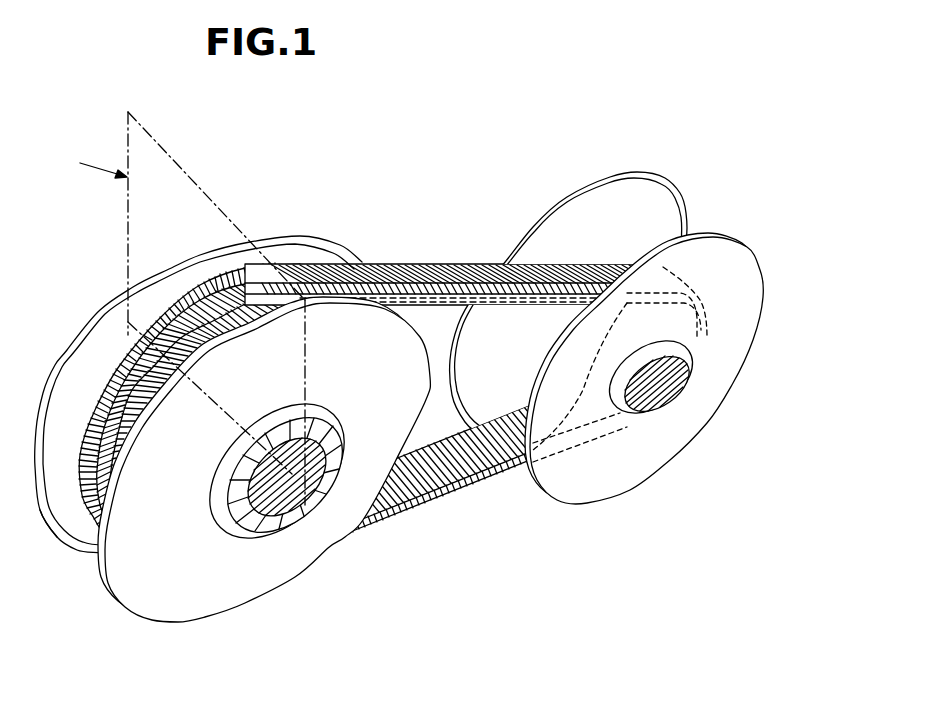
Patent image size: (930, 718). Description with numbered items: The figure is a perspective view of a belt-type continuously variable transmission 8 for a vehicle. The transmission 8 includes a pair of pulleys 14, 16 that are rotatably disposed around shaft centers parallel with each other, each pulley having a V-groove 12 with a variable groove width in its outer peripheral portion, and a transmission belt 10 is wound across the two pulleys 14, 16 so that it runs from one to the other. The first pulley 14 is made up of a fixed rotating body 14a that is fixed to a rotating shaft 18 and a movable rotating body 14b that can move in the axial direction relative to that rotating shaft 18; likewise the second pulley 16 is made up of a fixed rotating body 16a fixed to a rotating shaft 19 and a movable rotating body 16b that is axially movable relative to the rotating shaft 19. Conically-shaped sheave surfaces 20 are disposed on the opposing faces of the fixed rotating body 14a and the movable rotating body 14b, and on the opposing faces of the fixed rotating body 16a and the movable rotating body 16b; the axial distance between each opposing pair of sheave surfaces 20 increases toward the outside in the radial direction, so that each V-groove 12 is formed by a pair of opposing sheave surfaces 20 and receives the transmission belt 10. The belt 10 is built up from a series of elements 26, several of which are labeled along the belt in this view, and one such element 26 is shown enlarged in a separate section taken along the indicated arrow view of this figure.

The belt-type continuously variable transmission 8 is at (563, 98).
The transmission belt 10 is at (458, 516).
The V-groove 12 is at (705, 214).
The pulley 14 is at (316, 215).
The fixed rotating body 14a is at (62, 386).
The movable rotating body 14b is at (200, 592).
The pulley 16 is at (538, 199).
The fixed rotating body 16a is at (620, 474).
The movable rotating body 16b is at (580, 195).
The rotating shaft 18 is at (294, 525).
The rotating shaft 19 is at (665, 392).
The sheave surface 20 is at (72, 518).
The element 26 is at (372, 266).